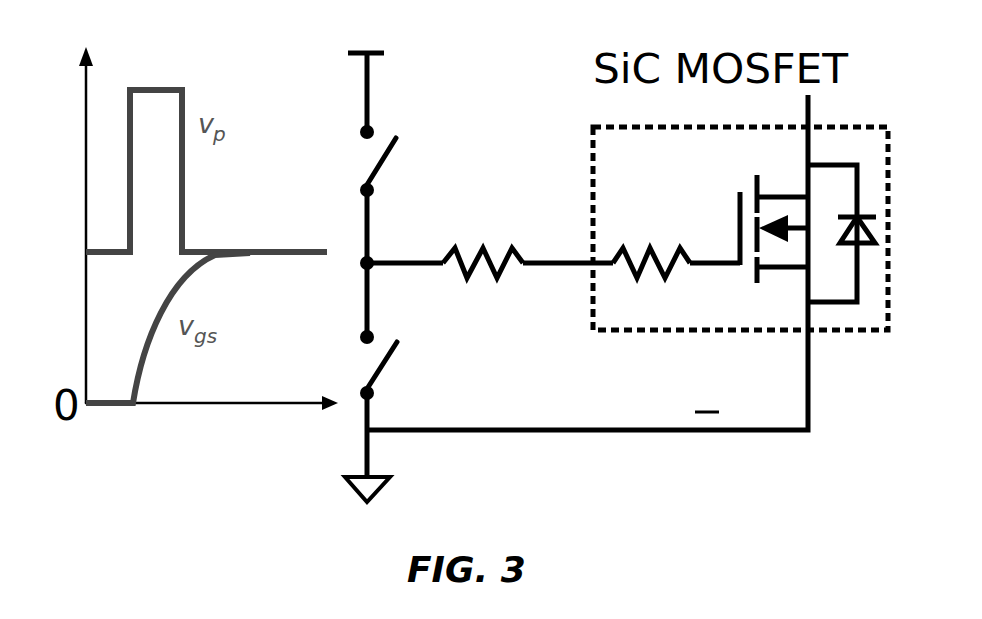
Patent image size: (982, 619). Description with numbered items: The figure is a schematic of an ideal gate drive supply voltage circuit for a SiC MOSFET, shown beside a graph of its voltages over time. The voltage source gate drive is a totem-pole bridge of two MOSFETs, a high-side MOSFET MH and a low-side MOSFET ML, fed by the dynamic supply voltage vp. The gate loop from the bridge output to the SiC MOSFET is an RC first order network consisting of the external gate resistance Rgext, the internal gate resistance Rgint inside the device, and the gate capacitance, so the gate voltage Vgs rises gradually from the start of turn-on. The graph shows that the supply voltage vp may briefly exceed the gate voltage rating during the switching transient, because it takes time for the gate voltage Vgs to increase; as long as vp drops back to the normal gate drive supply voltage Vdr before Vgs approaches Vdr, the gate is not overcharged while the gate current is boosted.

The dynamic supply voltage vp is at (366, 74).
The high-side MOSFET MH is at (410, 161).
The low-side MOSFET ML is at (413, 365).
The external gate resistance Rgext is at (485, 242).
The internal gate resistance Rgint is at (656, 242).
The gate voltage Vgs is at (703, 340).
The gate drive supply voltage Vdr is at (54, 252).